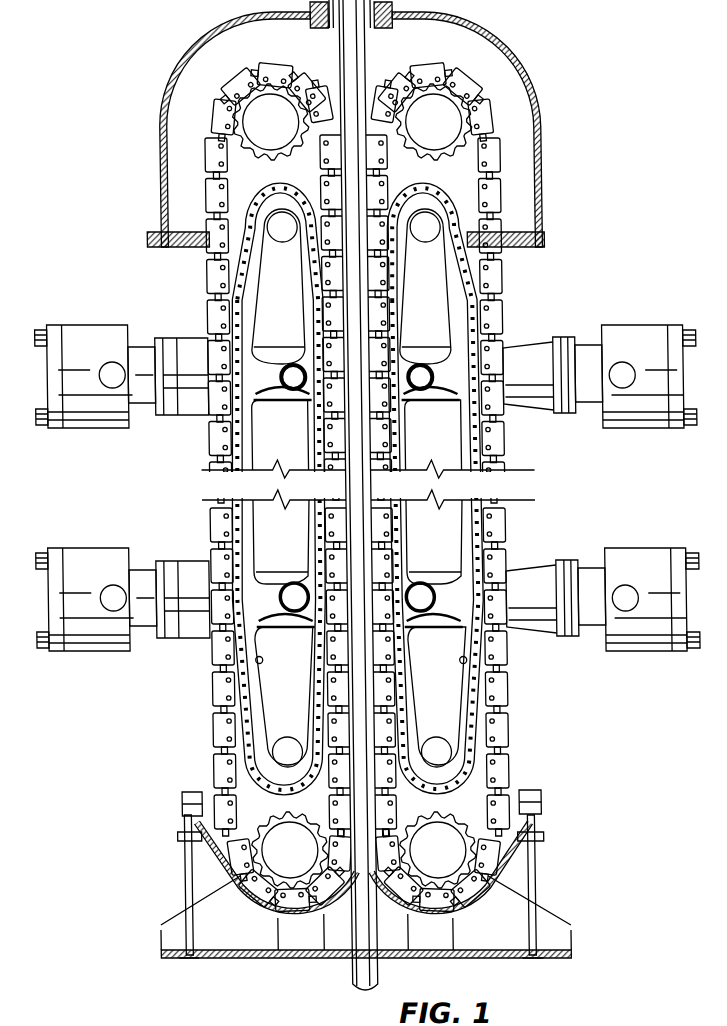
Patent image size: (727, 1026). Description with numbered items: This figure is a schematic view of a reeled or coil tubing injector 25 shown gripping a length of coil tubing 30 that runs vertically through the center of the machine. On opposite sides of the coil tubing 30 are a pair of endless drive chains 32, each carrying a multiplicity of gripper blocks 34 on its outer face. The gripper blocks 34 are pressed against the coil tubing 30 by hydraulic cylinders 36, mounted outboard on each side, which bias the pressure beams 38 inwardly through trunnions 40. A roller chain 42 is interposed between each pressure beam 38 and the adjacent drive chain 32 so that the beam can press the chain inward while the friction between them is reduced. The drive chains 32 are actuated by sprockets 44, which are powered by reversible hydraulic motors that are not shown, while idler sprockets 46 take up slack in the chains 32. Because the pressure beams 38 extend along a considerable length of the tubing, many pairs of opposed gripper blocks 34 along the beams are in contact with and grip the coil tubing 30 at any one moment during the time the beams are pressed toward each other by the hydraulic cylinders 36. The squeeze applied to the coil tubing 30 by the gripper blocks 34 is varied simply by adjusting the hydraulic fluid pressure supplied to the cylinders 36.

The coil tubing injector 25 is at (123, 68).
The coil tubing 30 is at (341, 41).
The endless drive chains 32 is at (256, 68).
The gripper blocks 34 is at (226, 141).
The hydraulic cylinders 36 is at (85, 333).
The pressure beams 38 is at (307, 299).
The trunnions 40 is at (288, 392).
The roller chain 42 is at (310, 540).
The sprockets 44 is at (218, 160).
The idler sprockets 46 is at (258, 851).